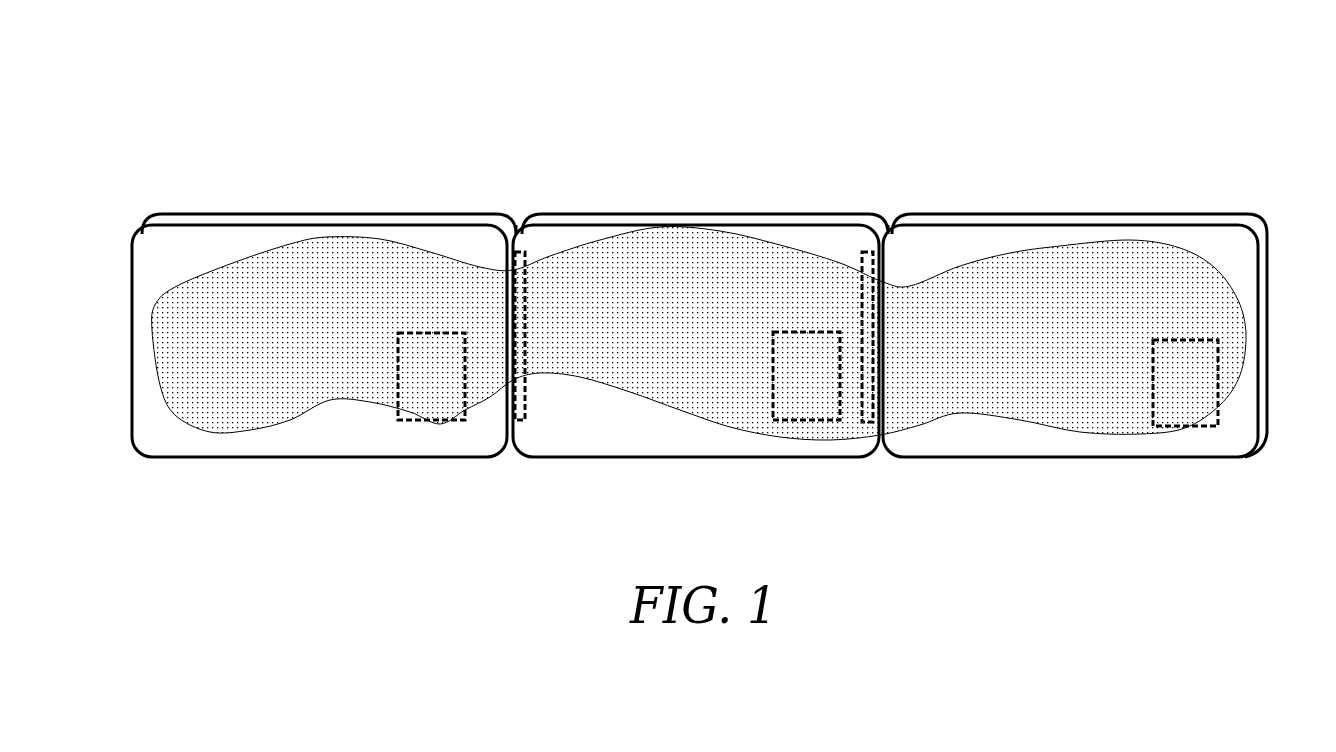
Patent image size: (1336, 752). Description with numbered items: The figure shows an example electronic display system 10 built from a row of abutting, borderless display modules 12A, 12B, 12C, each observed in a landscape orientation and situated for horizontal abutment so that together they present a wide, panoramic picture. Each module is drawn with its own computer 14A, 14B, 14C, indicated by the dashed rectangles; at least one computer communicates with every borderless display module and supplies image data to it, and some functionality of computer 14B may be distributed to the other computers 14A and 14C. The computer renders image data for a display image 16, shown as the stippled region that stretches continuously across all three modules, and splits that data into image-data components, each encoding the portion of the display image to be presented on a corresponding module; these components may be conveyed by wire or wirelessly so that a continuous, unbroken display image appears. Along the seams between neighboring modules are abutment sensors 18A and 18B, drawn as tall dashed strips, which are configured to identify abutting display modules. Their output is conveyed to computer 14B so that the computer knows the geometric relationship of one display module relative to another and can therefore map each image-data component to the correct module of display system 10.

The electronic display system 10 is at (1141, 118).
The borderless display module 12A is at (493, 253).
The borderless display module 12B is at (861, 253).
The borderless display module 12C is at (1241, 253).
The computer 14A is at (457, 421).
The computer 14B is at (772, 373).
The computer 14C is at (1220, 413).
The display image 16 is at (248, 264).
The abutment sensor 18A is at (526, 410).
The abutment sensor 18B is at (873, 260).